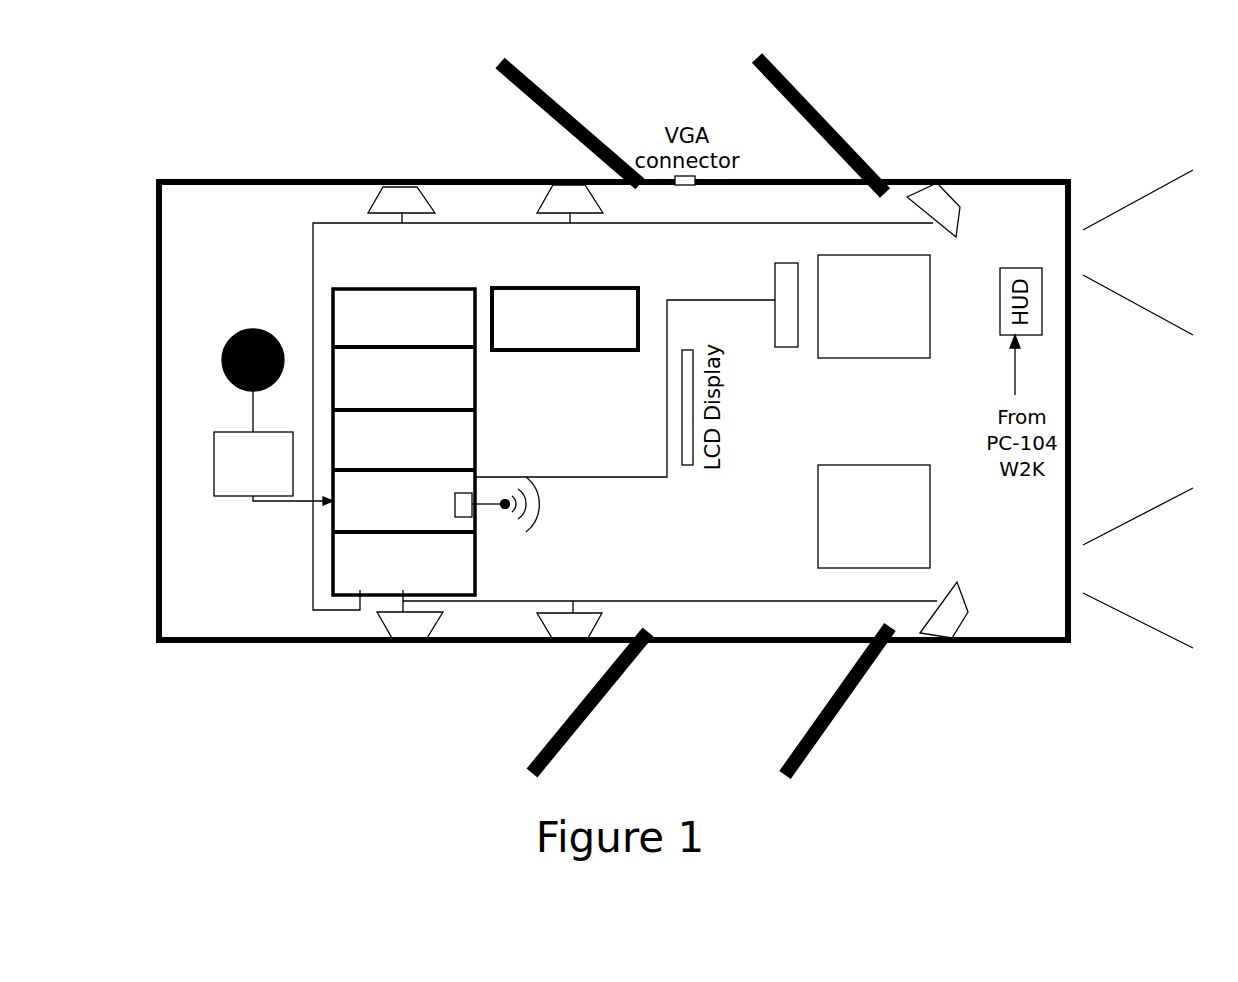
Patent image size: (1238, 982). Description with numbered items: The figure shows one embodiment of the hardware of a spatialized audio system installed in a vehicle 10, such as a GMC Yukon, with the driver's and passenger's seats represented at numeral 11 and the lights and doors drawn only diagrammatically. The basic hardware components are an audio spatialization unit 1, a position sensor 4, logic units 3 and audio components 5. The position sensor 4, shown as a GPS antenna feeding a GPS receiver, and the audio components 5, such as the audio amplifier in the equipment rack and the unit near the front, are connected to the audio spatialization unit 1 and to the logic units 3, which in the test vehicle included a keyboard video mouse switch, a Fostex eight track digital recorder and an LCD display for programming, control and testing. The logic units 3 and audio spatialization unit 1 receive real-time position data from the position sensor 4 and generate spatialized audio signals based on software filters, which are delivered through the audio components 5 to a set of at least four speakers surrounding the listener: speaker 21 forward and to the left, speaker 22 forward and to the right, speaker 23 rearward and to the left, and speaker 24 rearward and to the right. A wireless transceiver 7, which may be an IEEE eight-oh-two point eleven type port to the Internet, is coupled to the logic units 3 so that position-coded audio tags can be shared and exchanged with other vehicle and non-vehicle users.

The audio spatialization unit 1 is at (522, 295).
The speaker 21 is at (952, 607).
The speaker 22 is at (944, 203).
The speaker 23 is at (392, 205).
The speaker 24 is at (400, 627).
The logic units 3 is at (480, 290).
The position sensor 4 is at (235, 362).
The audio components 5 is at (790, 272).
The wireless transceiver 7 is at (482, 520).
The vehicle 10 is at (1048, 182).
The seats 11 is at (862, 316).